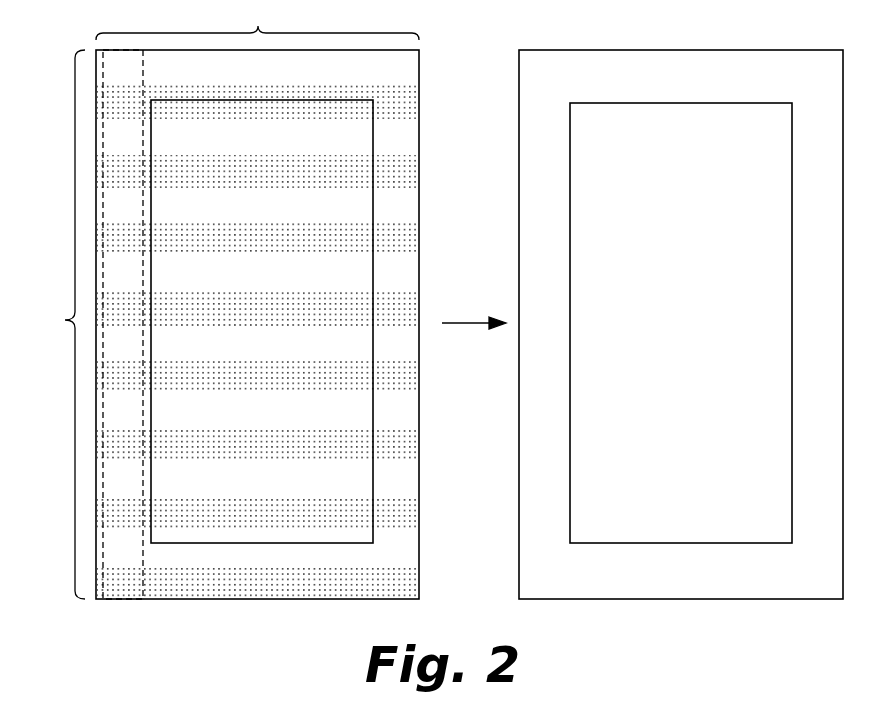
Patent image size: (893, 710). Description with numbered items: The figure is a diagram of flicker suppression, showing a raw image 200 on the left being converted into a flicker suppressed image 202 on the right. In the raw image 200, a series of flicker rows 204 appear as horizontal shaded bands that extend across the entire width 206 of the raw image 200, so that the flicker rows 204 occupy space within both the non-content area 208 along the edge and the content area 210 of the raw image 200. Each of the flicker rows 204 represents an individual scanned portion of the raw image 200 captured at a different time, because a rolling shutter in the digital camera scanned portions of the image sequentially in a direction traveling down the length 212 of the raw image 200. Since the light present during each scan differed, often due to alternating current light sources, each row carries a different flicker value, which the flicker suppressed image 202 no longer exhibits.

The raw image 200 is at (399, 81).
The flicker suppressed image 202 is at (826, 82).
The flicker rows 204 is at (405, 204).
The width 206 is at (257, 20).
The non-content area 208 is at (121, 570).
The content area 210 is at (232, 575).
The length 212 is at (55, 324).